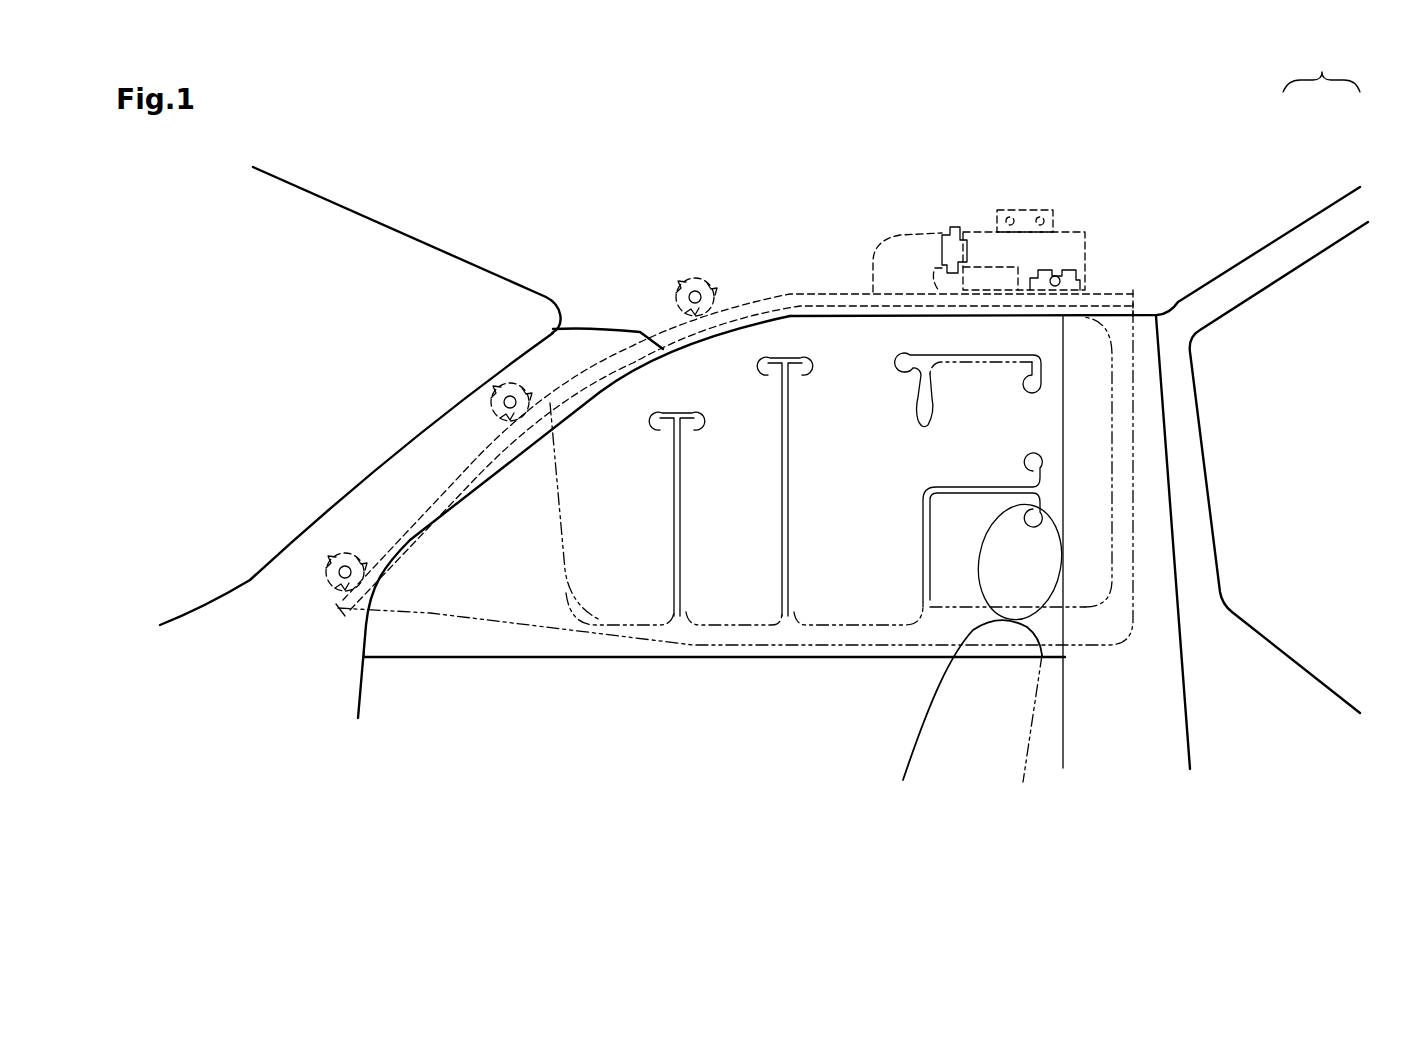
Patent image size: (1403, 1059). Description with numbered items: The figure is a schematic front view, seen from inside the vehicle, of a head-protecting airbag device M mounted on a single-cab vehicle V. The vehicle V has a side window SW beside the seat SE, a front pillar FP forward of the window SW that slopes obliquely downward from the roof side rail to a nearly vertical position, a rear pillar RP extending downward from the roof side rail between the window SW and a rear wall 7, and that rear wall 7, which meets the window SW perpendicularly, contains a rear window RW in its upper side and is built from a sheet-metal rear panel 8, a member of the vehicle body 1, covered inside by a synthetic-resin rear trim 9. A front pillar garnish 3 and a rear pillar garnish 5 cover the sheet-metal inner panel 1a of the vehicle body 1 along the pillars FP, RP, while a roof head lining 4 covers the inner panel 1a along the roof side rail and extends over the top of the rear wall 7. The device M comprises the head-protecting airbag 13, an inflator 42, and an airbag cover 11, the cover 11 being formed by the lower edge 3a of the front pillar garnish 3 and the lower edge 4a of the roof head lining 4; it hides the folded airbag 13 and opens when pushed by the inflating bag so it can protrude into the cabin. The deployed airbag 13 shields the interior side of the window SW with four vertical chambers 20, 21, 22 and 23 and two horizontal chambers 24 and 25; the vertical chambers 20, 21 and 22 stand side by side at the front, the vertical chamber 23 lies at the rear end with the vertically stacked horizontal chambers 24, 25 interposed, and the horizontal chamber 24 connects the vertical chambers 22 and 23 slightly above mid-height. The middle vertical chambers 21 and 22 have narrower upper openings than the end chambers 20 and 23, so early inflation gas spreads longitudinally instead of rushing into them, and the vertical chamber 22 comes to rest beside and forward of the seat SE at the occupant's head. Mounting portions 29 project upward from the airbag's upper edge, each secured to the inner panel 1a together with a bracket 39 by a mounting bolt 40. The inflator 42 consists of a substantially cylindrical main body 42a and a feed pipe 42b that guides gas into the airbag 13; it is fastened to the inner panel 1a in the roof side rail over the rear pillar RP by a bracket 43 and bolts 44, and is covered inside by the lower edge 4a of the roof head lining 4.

The vehicle body 1 is at (572, 374).
The inner panel 1a is at (363, 493).
The front pillar garnish 3 is at (438, 436).
The lower edge of the front pillar garnish 3a is at (440, 510).
The roof head lining 4 is at (1120, 290).
The lower edge of the roof head lining 4a is at (843, 317).
The rear pillar garnish 5 is at (1157, 550).
The rear wall 7 is at (1321, 64).
The rear panel 8 is at (1315, 232).
The rear trim 9 is at (1347, 207).
The airbag cover 11 is at (665, 463).
The head-protecting airbag 13 is at (640, 330).
The vertical chamber 20 is at (625, 611).
The vertical chamber 21 is at (736, 614).
The vertical chamber 22 is at (857, 614).
The vertical chamber 23 is at (1100, 467).
The horizontal chamber 24 is at (967, 433).
The horizontal chamber 25 is at (943, 530).
The mounting portion 29 is at (502, 375).
The bracket 39 is at (520, 387).
The mounting bolt 40 is at (515, 423).
The inflator 42 is at (1070, 198).
The main body 42a is at (985, 240).
The feed pipe 42b is at (962, 233).
The bracket 43 is at (1025, 292).
The bolts 44 is at (1040, 212).
The front pillar FP is at (266, 557).
The head-protecting airbag device M is at (1158, 262).
The single-cab vehicle V is at (390, 742).
The side window SW is at (680, 650).
The seat SE is at (1030, 764).
The rear window RW is at (1291, 643).
The rear pillar RP is at (1185, 744).